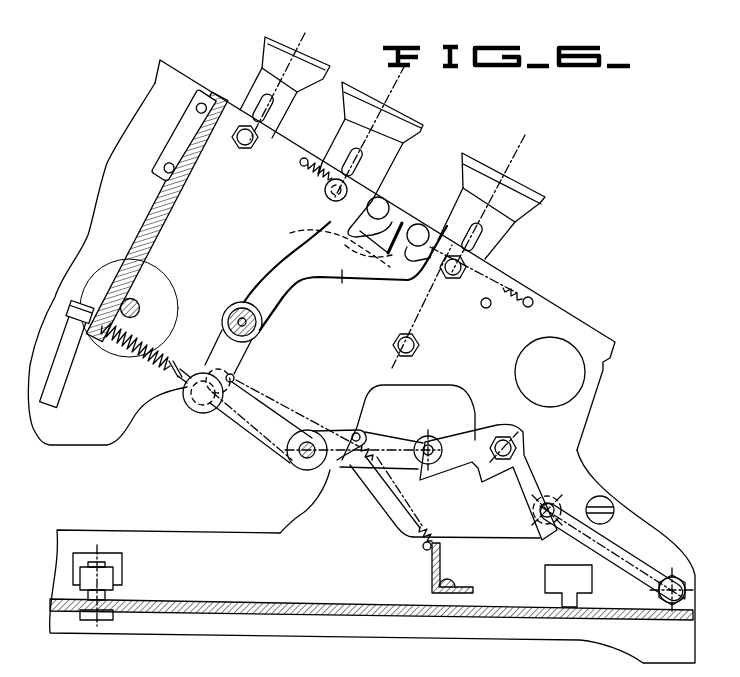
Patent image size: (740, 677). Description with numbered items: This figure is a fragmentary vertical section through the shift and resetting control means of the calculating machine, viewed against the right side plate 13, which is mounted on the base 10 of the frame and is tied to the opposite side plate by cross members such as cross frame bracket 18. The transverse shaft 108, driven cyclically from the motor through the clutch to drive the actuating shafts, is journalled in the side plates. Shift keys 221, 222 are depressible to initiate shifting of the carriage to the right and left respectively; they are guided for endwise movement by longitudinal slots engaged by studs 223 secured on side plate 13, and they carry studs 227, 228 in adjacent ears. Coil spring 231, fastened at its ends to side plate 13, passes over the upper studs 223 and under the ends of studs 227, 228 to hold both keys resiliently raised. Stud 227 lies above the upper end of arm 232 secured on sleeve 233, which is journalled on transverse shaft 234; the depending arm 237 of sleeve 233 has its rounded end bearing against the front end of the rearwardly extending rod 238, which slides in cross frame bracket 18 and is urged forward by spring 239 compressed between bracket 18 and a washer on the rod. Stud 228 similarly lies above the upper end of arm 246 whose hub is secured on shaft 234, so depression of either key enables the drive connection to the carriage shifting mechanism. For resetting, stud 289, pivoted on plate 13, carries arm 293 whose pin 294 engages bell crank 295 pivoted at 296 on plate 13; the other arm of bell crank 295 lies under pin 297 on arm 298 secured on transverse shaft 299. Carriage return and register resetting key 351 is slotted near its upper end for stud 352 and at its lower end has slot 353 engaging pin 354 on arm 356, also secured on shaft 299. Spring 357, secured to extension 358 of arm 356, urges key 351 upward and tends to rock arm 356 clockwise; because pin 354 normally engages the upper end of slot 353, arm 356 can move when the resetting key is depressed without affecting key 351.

The base 10 is at (478, 632).
The right side plate 13 is at (571, 319).
The cross frame bracket 18 is at (168, 212).
The transverse shaft 108 is at (146, 310).
The shift key 221 is at (495, 225).
The shift key 222 is at (348, 104).
The studs 223 is at (336, 184).
The stud 227 is at (428, 222).
The stud 228 is at (380, 198).
The coil spring 231 is at (312, 162).
The arm 232 is at (385, 280).
The sleeve 233 is at (263, 326).
The transverse shaft 234 is at (230, 309).
The depending arm 237 is at (219, 354).
The rod 238 is at (72, 314).
The spring 239 is at (157, 368).
The arm 246 is at (345, 276).
The stud 289 is at (658, 610).
The arm 293 is at (623, 545).
The pin 294 is at (550, 495).
The bell crank 295 is at (512, 492).
The pivot 296 is at (521, 445).
The pin 297 is at (435, 441).
The arm 298 is at (385, 438).
The transverse shaft 299 is at (292, 461).
The carriage return and register resetting key 351 is at (262, 82).
The stud 352 is at (254, 144).
The slot 353 is at (190, 405).
The pin 354 is at (236, 377).
The arm 356 is at (250, 422).
The spring 357 is at (427, 531).
The extension 358 is at (343, 428).